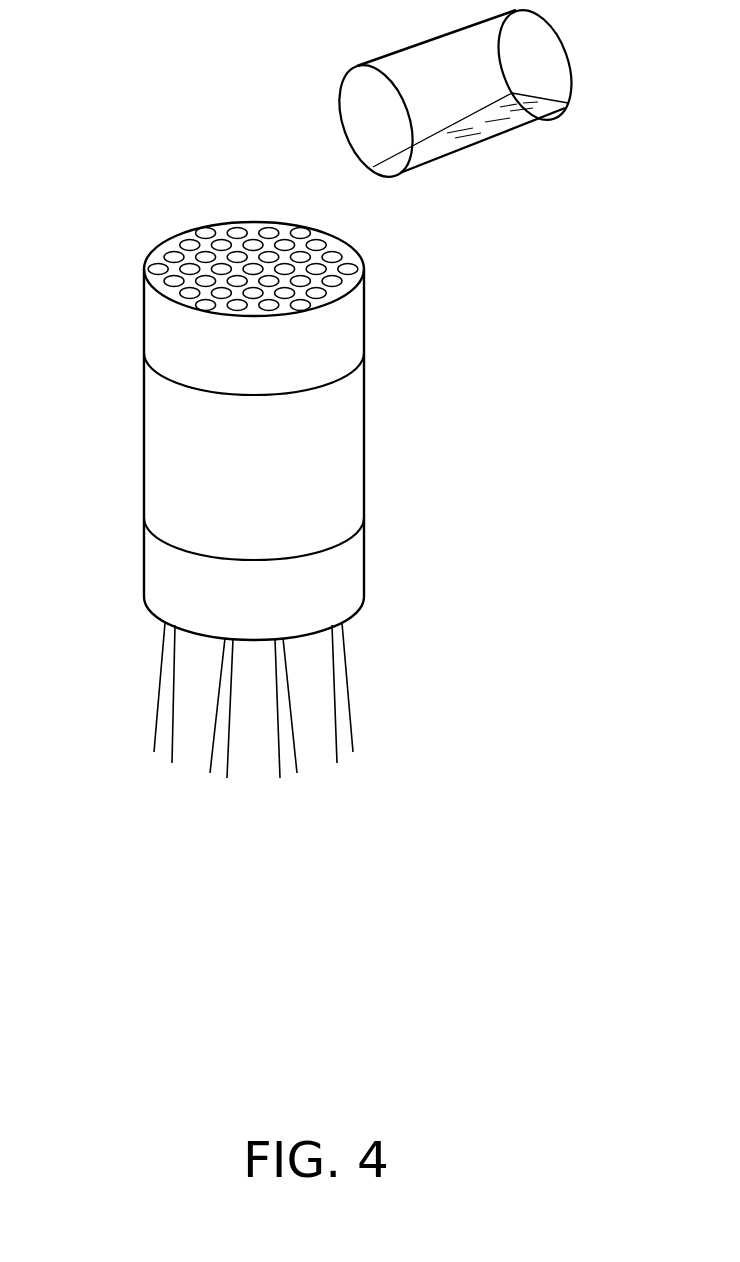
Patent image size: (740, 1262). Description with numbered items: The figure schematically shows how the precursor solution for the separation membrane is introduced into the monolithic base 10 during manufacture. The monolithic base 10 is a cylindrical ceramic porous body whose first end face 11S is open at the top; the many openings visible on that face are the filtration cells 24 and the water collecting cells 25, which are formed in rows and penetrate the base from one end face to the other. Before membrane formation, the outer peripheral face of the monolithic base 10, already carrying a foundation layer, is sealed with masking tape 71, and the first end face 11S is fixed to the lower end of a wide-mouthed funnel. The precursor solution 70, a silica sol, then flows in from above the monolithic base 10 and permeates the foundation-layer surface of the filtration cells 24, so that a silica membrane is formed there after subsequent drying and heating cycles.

The monolithic base 10 is at (143, 422).
The first end face 11S is at (150, 240).
The filtration cells 24 is at (315, 268).
The water collecting cells 25 is at (237, 305).
The precursor solution 70 is at (510, 120).
The masking tape 71 is at (327, 465).